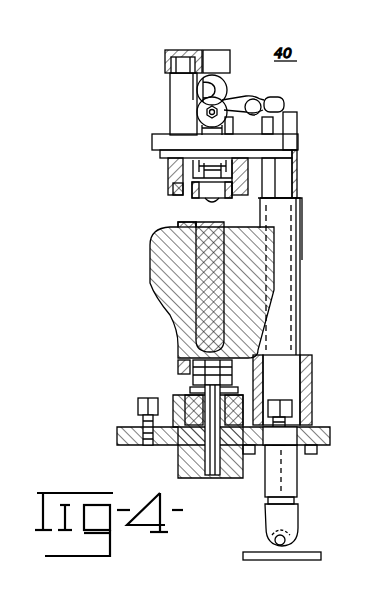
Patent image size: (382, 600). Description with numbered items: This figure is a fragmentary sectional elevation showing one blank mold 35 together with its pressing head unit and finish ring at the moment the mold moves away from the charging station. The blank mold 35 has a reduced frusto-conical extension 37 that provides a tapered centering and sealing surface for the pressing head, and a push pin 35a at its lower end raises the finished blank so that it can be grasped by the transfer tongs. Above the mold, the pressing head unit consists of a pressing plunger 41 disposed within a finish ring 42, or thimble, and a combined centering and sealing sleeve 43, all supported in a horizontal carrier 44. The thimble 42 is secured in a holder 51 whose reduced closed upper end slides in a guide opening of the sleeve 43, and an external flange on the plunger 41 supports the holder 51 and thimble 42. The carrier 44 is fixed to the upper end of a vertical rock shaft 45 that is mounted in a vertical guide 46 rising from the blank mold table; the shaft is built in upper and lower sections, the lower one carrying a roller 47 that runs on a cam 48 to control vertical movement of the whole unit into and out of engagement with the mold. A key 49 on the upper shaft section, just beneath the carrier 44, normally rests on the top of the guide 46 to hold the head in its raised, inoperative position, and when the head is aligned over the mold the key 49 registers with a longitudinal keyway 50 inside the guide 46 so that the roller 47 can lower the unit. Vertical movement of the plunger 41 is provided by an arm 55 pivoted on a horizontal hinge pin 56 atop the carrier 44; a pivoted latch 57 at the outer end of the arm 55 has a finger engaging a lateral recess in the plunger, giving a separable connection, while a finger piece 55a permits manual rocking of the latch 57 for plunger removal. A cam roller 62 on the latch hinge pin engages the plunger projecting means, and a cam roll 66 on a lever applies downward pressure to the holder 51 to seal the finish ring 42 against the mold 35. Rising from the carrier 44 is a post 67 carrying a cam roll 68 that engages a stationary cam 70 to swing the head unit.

The blank mold 35 is at (158, 260).
The push pin 35a is at (200, 373).
The frusto-conical extension 37 is at (178, 224).
The pressing plunger 41 is at (212, 176).
The finish ring 42 is at (200, 197).
The centering and sealing sleeve 43 is at (173, 156).
The carrier 44 is at (175, 139).
The rock shaft 45 is at (272, 168).
The vertical guide 46 is at (280, 300).
The roller 47 is at (290, 545).
The cam 48 is at (300, 560).
The key 49 is at (296, 177).
The keyway 50 is at (302, 209).
The thimble holder 51 is at (184, 191).
The arm 55 is at (271, 118).
The finger piece 55a is at (286, 103).
The horizontal hinge pin 56 is at (262, 101).
The pivoted latch 57 is at (206, 88).
The cam roller 62 is at (229, 105).
The cam roll 66 is at (224, 89).
The post 67 is at (176, 91).
The cam roll 68 is at (192, 57).
The stationary cam 70 is at (218, 56).